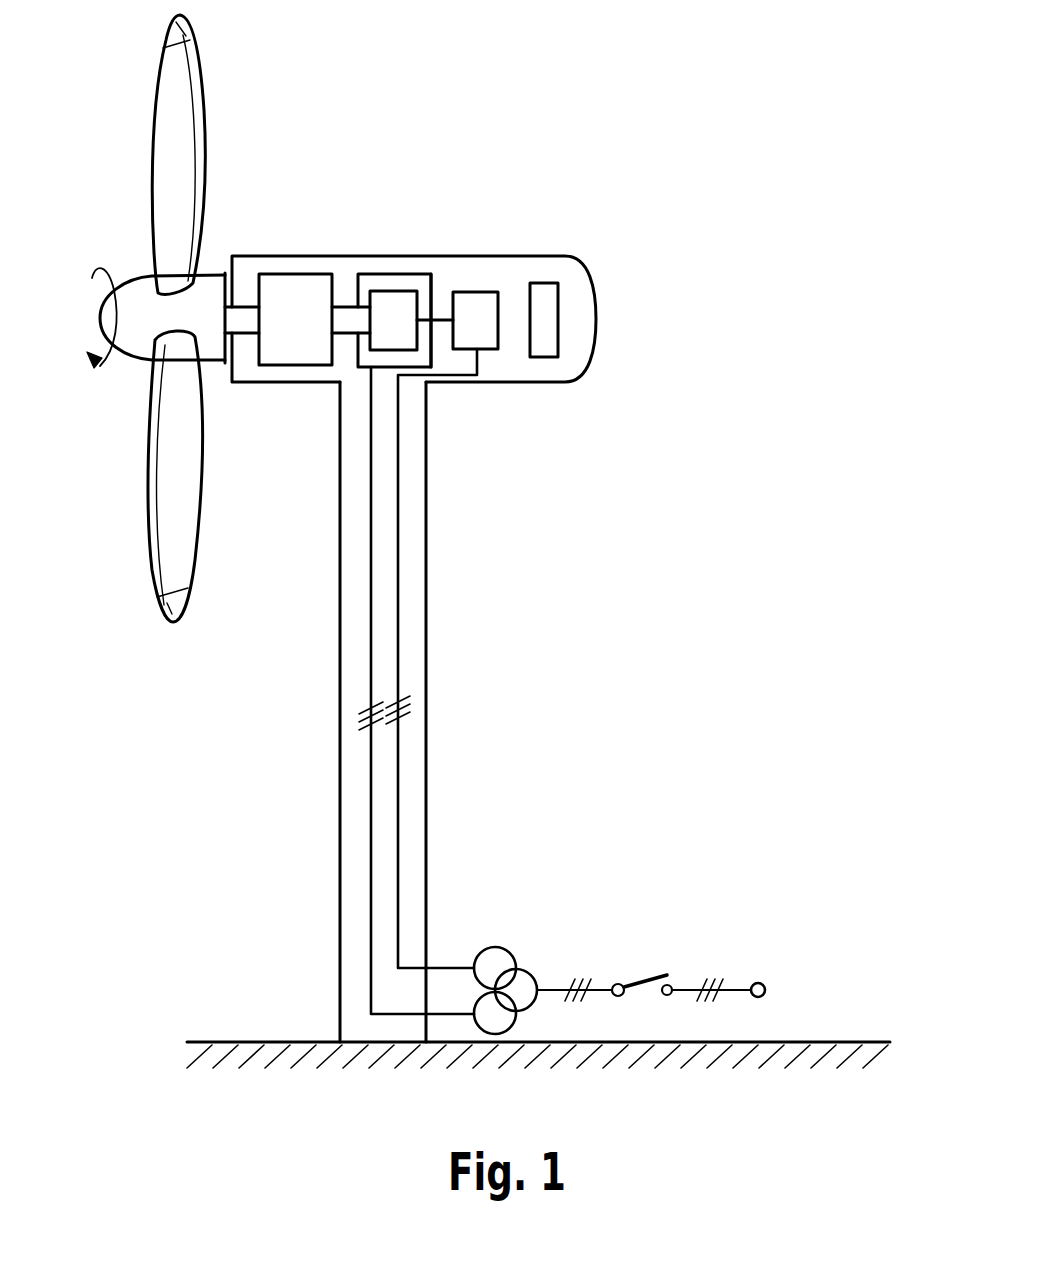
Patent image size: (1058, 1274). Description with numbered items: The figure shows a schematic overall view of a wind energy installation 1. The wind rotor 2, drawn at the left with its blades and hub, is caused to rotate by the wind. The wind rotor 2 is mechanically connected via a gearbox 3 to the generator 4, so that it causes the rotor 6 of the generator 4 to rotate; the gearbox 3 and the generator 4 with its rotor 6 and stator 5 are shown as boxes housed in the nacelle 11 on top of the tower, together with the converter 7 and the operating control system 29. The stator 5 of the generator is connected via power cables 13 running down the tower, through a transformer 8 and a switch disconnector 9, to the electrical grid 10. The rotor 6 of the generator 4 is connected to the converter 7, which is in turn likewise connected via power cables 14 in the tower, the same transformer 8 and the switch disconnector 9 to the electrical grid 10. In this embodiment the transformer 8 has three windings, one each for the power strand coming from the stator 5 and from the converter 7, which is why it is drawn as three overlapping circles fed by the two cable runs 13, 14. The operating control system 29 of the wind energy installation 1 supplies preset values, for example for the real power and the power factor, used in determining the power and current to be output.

The wind energy installation 1 is at (138, 559).
The wind rotor 2 is at (140, 302).
The gearbox 3 is at (295, 274).
The generator 4 is at (368, 275).
The stator 5 is at (431, 287).
The rotor 6 is at (384, 291).
The converter 7 is at (487, 292).
The transformer 8 is at (530, 970).
The switch disconnector 9 is at (642, 972).
The electrical grid 10 is at (767, 982).
The nacelle 11 is at (345, 353).
The power cables 13 is at (371, 540).
The power cables 14 is at (398, 540).
The operating control system 29 is at (558, 320).